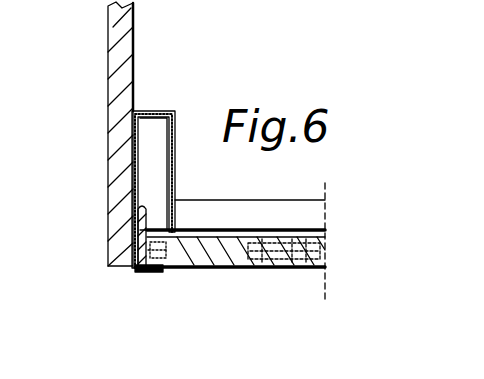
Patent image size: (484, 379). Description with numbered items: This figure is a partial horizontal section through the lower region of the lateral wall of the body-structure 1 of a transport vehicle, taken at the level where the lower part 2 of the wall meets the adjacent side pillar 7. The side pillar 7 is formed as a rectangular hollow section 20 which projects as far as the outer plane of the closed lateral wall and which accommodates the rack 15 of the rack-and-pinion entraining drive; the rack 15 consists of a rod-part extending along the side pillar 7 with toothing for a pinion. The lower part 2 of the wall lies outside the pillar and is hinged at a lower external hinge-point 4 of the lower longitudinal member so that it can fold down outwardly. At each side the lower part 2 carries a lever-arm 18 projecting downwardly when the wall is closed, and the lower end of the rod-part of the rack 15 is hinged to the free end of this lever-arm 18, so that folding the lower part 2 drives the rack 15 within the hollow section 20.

The body-structure 1 is at (104, 79).
The side pillar 7 is at (143, 109).
The rectangular hollow section 20 is at (151, 131).
The rack 15 is at (141, 205).
The lower part 2 is at (220, 270).
The lower external hinge-point 4 is at (278, 272).
The lever-arm 18 is at (157, 273).